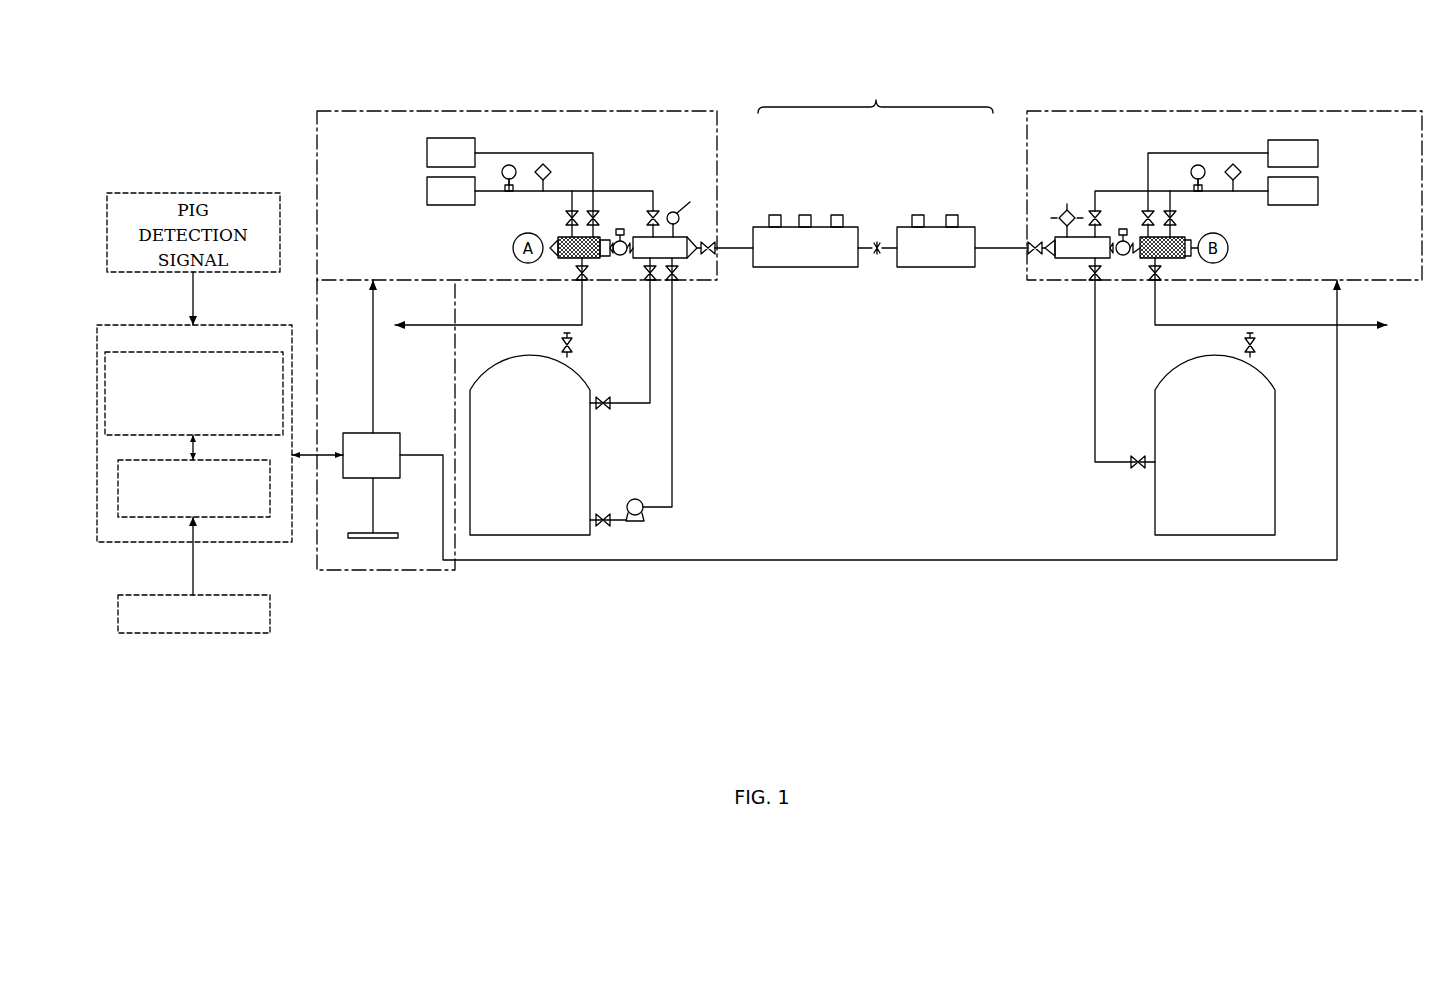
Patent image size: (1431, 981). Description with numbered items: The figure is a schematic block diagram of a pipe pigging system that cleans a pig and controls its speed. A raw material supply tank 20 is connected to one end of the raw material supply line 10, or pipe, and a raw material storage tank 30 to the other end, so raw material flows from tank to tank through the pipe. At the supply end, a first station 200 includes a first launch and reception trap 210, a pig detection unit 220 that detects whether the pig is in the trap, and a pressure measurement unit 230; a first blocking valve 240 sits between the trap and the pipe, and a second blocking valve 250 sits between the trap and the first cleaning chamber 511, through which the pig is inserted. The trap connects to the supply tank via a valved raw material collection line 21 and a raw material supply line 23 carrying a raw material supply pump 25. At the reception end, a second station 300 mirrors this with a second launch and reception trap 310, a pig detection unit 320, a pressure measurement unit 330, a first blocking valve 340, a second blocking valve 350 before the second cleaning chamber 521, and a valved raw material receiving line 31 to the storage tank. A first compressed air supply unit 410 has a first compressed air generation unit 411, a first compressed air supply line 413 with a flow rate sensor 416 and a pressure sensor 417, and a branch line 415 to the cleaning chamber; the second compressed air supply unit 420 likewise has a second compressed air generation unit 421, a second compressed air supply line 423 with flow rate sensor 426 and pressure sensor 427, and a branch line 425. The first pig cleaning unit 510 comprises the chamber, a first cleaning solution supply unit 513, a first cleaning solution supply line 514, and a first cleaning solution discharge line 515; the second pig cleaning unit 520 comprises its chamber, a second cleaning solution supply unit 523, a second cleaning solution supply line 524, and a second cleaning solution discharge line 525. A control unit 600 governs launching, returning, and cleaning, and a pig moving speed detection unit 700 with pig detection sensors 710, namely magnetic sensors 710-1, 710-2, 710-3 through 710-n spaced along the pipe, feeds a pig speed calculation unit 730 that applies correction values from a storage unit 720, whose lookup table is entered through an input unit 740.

The raw material supply line 10 is at (955, 267).
The raw material supply tank 20 is at (530, 540).
The raw material collection line 21 is at (657, 390).
The raw material supply line 23 is at (673, 450).
The raw material supply pump 25 is at (633, 525).
The raw material storage tank 30 is at (1277, 474).
The raw material receiving line 31 is at (1097, 436).
The first station 200 is at (400, 111).
The first launch and reception trap 210 is at (682, 265).
The pig detection unit 220 is at (695, 217).
The pressure measurement unit 230 is at (672, 212).
The first blocking valve 240 is at (718, 260).
The second blocking valve 250 is at (620, 262).
The second station 300 is at (1062, 111).
The second launch and reception trap 310 is at (1072, 270).
The pig detection unit 320 is at (1055, 225).
The pressure measurement unit 330 is at (1068, 208).
The first blocking valve 340 is at (1037, 280).
The second blocking valve 350 is at (1122, 262).
The first compressed air supply unit 410 is at (401, 222).
The first compressed air generation unit 411 is at (427, 191).
The first compressed air supply line 413 is at (655, 190).
The branch line 415 is at (566, 199).
The flow rate sensor 416 is at (503, 165).
The pressure sensor 417 is at (548, 165).
The second compressed air supply unit 420 is at (1340, 222).
The second compressed air generation unit 421 is at (1295, 205).
The second compressed air supply line 423 is at (1120, 189).
The branch line 425 is at (1173, 200).
The flow rate sensor 426 is at (1231, 164).
The pressure sensor 427 is at (1196, 165).
The first pig cleaning unit 510 is at (406, 121).
The first cleaning chamber 511 is at (552, 252).
The first cleaning solution supply unit 513 is at (427, 153).
The first cleaning solution supply line 514 is at (533, 153).
The first cleaning solution discharge line 515 is at (423, 330).
The second pig cleaning unit 520 is at (1339, 120).
The second cleaning chamber 521 is at (1210, 263).
The second cleaning solution supply unit 523 is at (1292, 140).
The second cleaning solution supply line 524 is at (1210, 153).
The second cleaning solution discharge line 525 is at (1313, 328).
The control unit 600 is at (390, 478).
The pig moving speed detection unit 700 is at (282, 542).
The pig detection sensors 710 is at (883, 199).
The magnetic sensor 710-1 is at (775, 215).
The magnetic sensor 710-2 is at (805, 215).
The magnetic sensor 710-3 is at (837, 215).
The magnetic sensor 710-n is at (952, 215).
The storage unit 720 is at (143, 517).
The pig speed calculation unit 730 is at (143, 352).
The input unit 740 is at (235, 633).